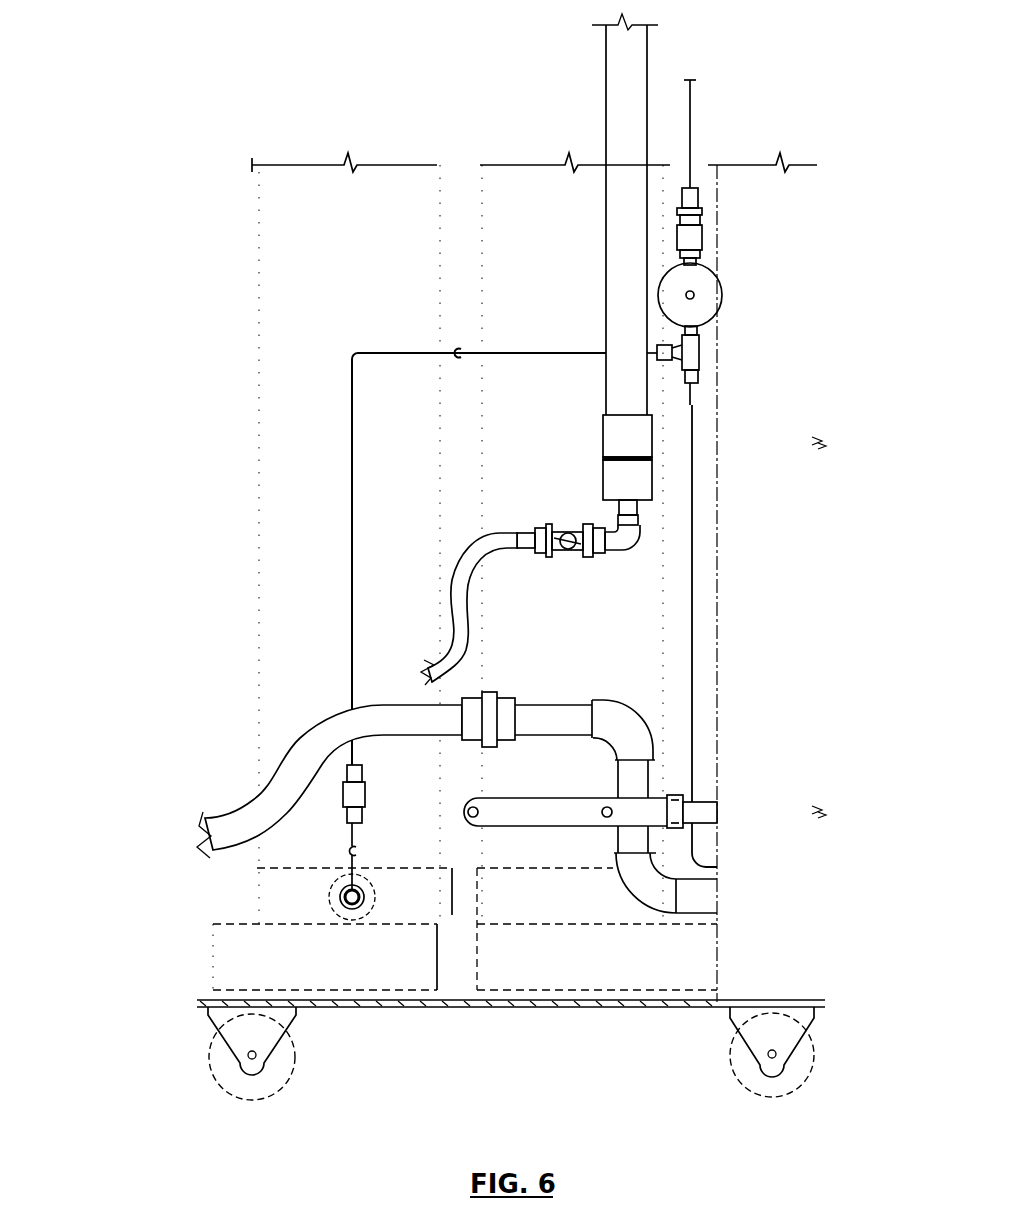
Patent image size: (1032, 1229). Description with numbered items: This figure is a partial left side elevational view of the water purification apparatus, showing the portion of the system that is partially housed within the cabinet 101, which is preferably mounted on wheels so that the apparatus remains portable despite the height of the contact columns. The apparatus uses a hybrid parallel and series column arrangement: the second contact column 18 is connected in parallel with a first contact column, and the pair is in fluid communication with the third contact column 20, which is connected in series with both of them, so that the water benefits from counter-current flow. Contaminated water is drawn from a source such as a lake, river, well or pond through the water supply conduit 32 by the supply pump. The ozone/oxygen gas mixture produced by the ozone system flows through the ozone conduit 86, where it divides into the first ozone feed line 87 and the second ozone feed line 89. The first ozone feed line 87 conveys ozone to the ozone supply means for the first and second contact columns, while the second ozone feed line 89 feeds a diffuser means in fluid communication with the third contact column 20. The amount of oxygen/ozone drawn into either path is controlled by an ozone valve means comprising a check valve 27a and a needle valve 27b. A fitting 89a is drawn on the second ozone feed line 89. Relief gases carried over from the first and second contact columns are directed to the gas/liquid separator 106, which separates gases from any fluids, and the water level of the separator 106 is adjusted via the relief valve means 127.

The second contact column 18 is at (482, 210).
The third contact column 20 is at (257, 377).
The check valve 27a is at (700, 232).
The needle valve 27b is at (724, 295).
The water supply conduit 32 is at (222, 827).
The ozone conduit 86 is at (686, 407).
The first ozone feed line 87 is at (685, 139).
The second ozone feed line 89 is at (357, 631).
The fitting 89a is at (343, 795).
The cabinet 101 is at (759, 862).
The gas/liquid separator 106 is at (650, 75).
The relief valve means 127 is at (532, 528).